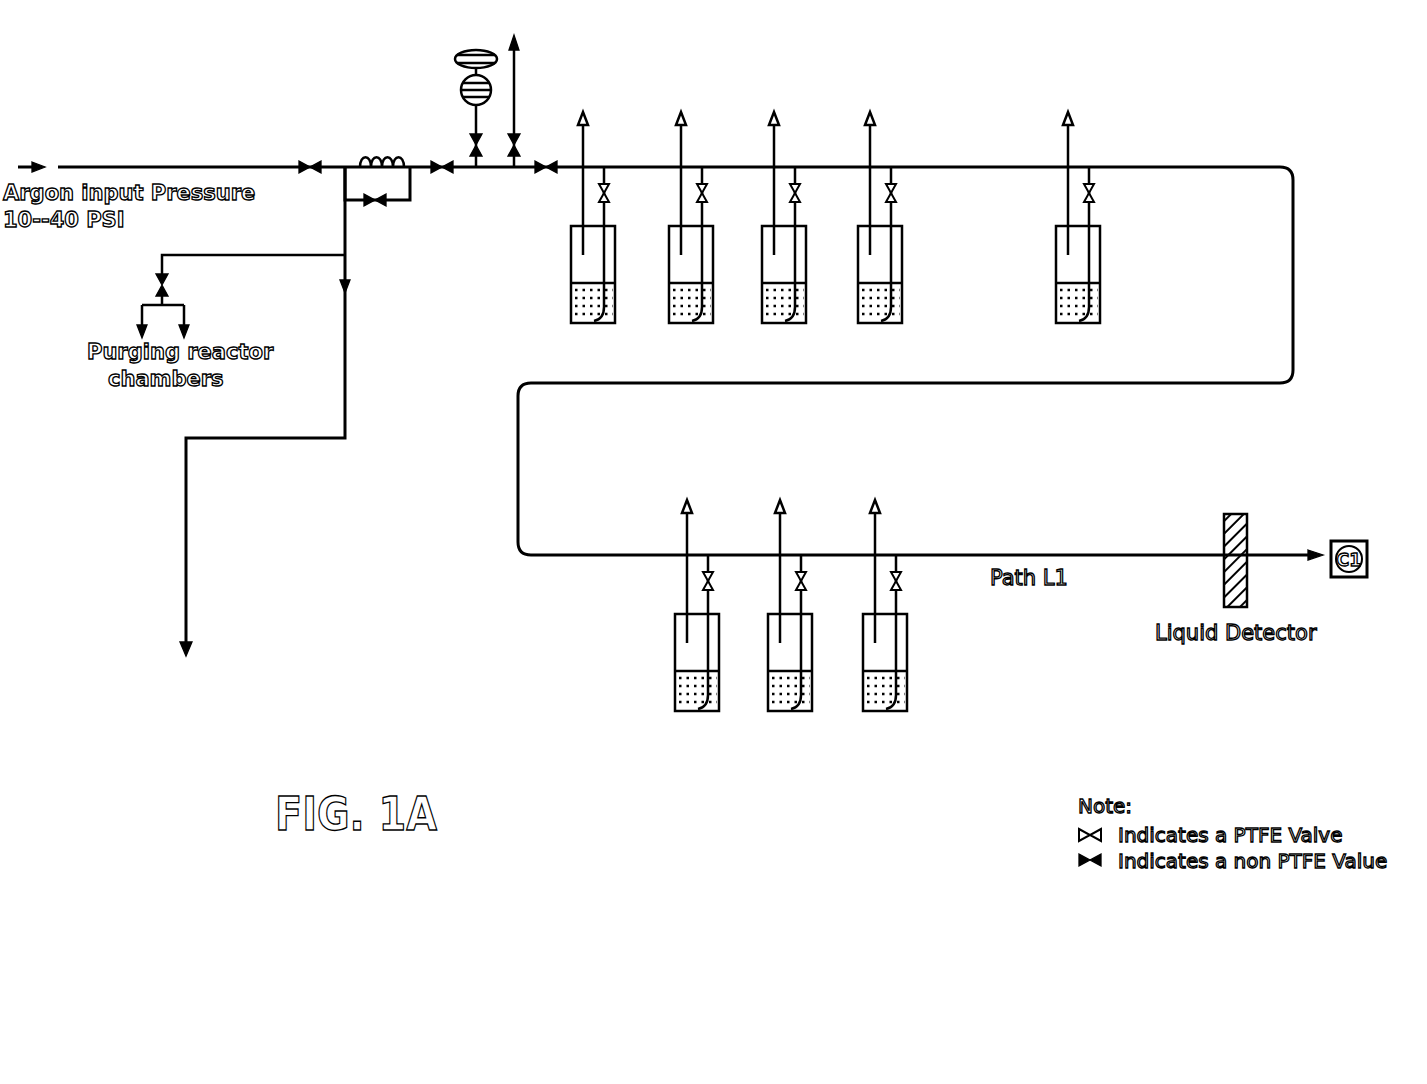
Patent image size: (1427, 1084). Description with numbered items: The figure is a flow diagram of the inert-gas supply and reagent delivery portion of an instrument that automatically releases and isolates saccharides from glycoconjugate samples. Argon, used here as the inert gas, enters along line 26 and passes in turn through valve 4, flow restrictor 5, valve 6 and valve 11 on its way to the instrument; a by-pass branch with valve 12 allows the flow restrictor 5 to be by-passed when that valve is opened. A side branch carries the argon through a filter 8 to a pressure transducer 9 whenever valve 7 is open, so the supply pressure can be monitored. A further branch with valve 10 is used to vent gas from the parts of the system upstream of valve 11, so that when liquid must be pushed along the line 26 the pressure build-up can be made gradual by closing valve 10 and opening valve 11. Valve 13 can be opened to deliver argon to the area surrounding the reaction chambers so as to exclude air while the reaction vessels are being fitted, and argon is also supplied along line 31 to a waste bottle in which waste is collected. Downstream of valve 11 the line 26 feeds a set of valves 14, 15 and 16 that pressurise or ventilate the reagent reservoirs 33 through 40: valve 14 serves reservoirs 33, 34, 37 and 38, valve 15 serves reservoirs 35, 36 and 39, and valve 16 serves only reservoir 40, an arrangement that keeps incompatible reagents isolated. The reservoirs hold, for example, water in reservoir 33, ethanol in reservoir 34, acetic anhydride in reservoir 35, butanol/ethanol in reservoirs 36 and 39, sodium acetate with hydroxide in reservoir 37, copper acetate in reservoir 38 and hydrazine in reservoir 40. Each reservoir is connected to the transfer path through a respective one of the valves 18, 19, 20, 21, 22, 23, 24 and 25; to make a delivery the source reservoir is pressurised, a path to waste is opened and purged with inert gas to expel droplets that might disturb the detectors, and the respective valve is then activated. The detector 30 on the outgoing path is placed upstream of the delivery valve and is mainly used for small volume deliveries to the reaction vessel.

The valve 4 is at (315, 160).
The flow restrictor 5 is at (380, 158).
The valve 6 is at (444, 160).
The valve 7 is at (472, 140).
The filter 8 is at (461, 91).
The pressure transducer 9 is at (474, 49).
The valve 10 is at (517, 153).
The valve 11 is at (540, 172).
The valve 12 is at (373, 206).
The valve 13 is at (158, 283).
The valve 14 is at (584, 110).
The valve 15 is at (774, 110).
The valve 16 is at (871, 500).
The valve 18 is at (612, 198).
The valve 19 is at (708, 198).
The valve 20 is at (801, 198).
The valve 21 is at (897, 198).
The valve 22 is at (1095, 198).
The valve 23 is at (702, 578).
The valve 24 is at (795, 578).
The valve 25 is at (890, 578).
The line 26 is at (1160, 165).
The detector 30 is at (1235, 514).
The line 31 is at (259, 429).
The reservoir 33 is at (573, 217).
The reservoir 34 is at (673, 217).
The reservoir 35 is at (767, 217).
The reservoir 36 is at (863, 217).
The reservoir 37 is at (1060, 217).
The reservoir 38 is at (675, 605).
The reservoir 39 is at (770, 605).
The reservoir 40 is at (865, 605).